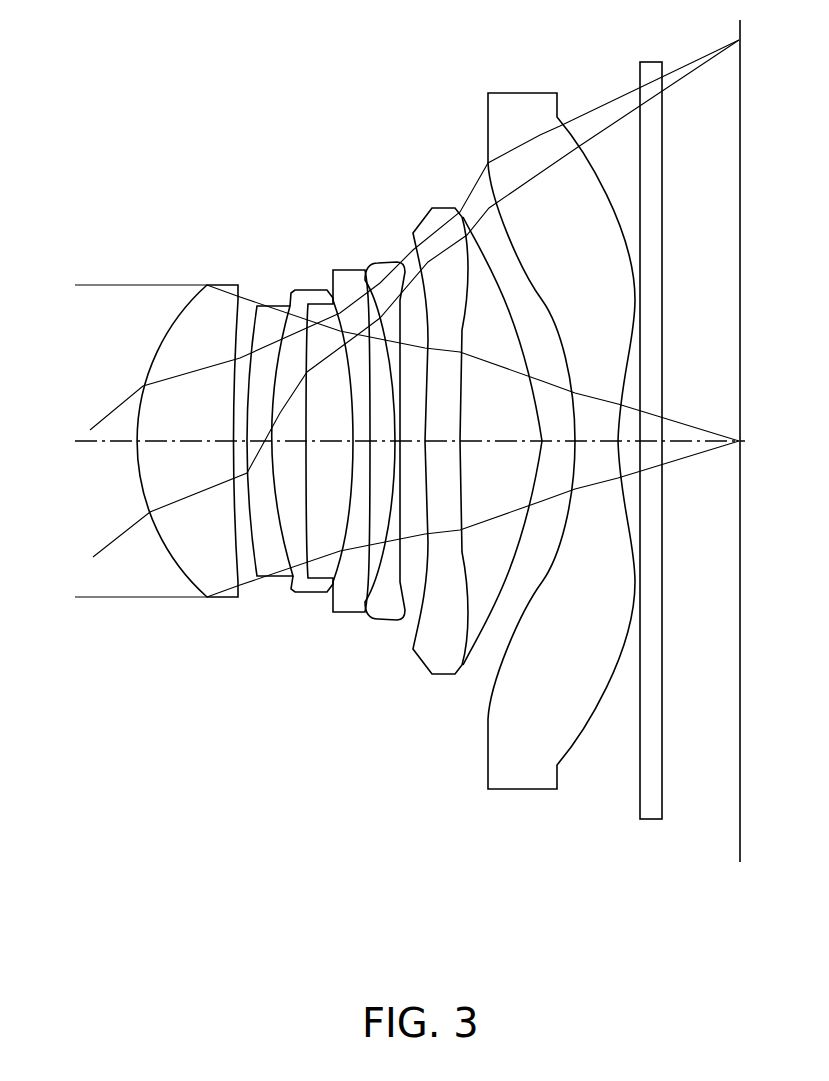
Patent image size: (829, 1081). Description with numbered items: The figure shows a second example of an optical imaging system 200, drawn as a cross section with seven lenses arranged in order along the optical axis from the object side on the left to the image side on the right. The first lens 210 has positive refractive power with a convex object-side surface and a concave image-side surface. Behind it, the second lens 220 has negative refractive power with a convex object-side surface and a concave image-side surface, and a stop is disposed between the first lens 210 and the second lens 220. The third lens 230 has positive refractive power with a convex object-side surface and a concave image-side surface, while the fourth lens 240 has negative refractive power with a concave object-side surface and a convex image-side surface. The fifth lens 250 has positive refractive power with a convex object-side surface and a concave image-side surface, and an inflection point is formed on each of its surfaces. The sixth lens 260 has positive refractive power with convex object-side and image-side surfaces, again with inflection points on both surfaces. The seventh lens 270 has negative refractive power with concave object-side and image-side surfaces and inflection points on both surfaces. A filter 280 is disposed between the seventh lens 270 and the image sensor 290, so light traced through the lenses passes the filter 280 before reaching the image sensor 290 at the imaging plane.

The optical imaging system 200 is at (387, 128).
The first lens 210 is at (223, 598).
The second lens 220 is at (270, 578).
The third lens 230 is at (310, 594).
The fourth lens 240 is at (347, 613).
The fifth lens 250 is at (380, 621).
The sixth lens 260 is at (443, 675).
The seventh lens 270 is at (522, 791).
The filter 280 is at (652, 820).
The image sensor 290 is at (740, 835).